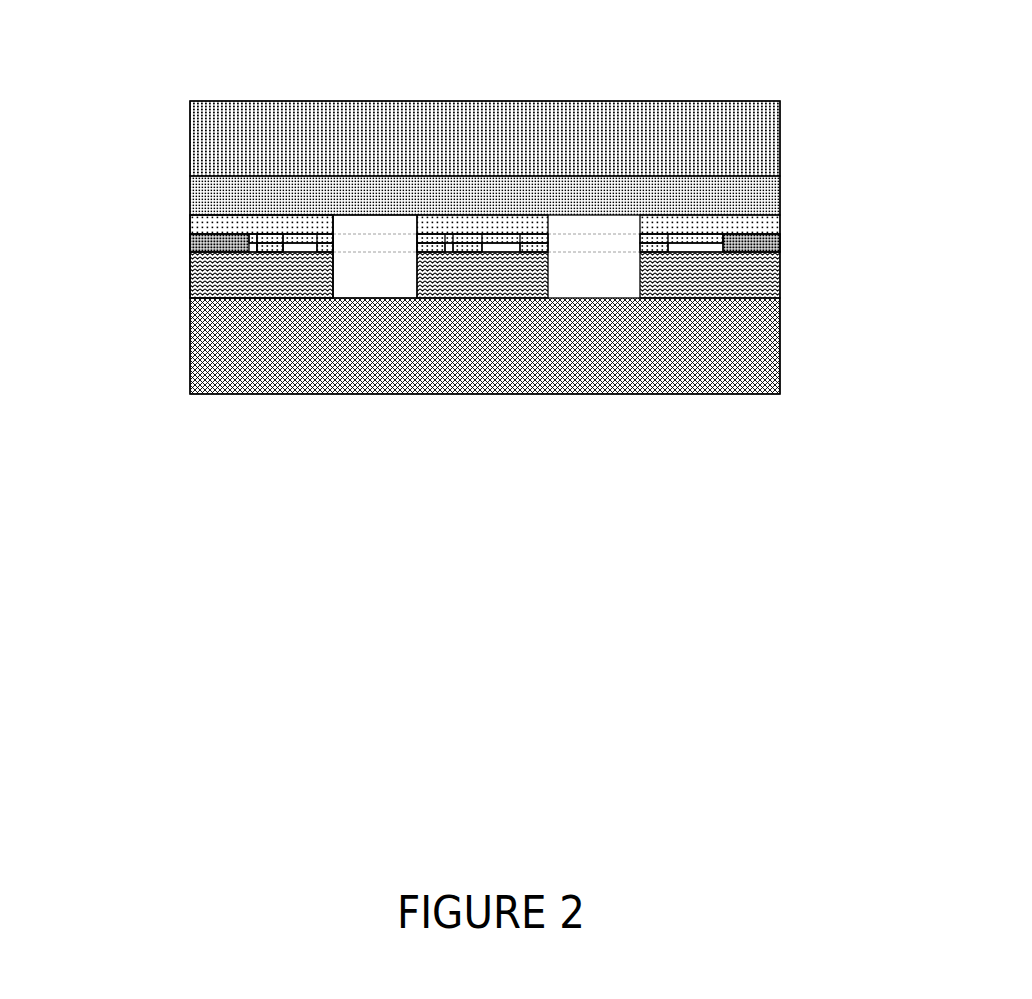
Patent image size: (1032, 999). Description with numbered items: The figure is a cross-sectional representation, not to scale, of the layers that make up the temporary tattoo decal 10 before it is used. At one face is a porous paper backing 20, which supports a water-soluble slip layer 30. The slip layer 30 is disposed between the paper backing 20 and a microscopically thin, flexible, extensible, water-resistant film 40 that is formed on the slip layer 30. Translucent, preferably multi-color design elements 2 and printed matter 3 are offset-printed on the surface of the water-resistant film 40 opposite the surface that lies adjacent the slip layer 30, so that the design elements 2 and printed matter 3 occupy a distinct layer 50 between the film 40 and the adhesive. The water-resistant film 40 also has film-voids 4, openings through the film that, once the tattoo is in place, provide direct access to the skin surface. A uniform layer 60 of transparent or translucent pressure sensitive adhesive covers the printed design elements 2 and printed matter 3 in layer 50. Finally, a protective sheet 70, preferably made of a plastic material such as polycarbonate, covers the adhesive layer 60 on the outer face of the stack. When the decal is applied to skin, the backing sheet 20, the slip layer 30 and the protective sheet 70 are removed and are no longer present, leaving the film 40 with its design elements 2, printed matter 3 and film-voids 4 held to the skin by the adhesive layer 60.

The light emitting device 10 is at (242, 429).
The design elements 2 is at (190, 242).
The printed matter 3 is at (262, 233).
The film-voids 4 is at (369, 225).
The paper backing 20 is at (750, 138).
The slip layer 30 is at (750, 185).
The water-resistant film 40 is at (755, 223).
The design layer 50 is at (750, 242).
The adhesive layer 60 is at (783, 279).
The protective sheet 70 is at (755, 375).